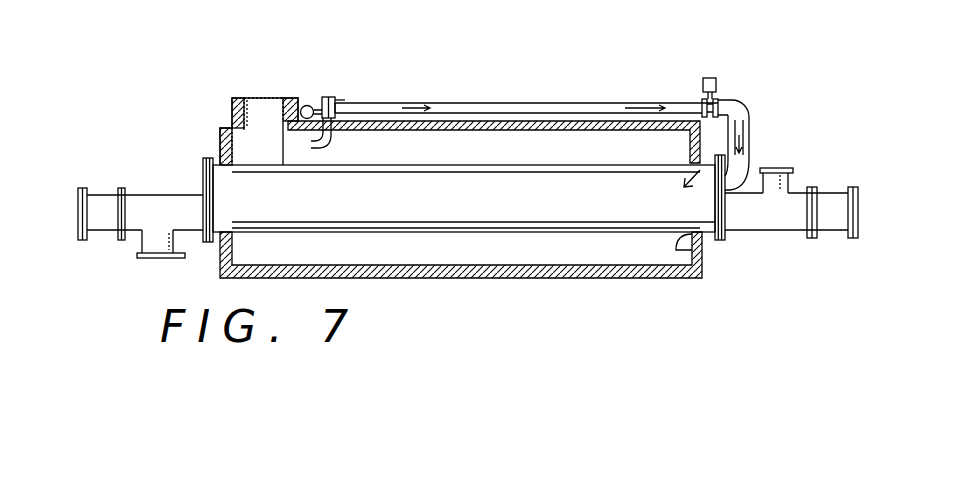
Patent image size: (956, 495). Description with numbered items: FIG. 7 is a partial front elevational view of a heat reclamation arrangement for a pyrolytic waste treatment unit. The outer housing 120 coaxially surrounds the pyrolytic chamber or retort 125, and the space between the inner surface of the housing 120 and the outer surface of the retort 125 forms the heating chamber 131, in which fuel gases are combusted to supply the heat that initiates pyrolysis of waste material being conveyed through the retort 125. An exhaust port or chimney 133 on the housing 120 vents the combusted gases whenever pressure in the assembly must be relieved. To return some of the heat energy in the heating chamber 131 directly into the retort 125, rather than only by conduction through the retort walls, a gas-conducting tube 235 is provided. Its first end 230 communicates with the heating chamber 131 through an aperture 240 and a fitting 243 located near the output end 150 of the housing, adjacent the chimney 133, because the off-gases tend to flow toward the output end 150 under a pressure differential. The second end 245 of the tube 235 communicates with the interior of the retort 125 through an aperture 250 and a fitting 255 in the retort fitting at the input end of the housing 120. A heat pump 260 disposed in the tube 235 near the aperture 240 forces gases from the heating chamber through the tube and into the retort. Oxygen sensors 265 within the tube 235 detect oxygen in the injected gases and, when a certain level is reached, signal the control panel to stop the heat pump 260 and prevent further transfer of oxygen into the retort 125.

The outer housing 120 is at (437, 280).
The retort 125 is at (702, 250).
The heating chamber 131 is at (457, 160).
The exhaust port or chimney 133 is at (268, 104).
The output end 150 is at (203, 160).
The first end 230 is at (318, 97).
The gas-conducting tube 235 is at (530, 113).
The aperture 240 is at (311, 148).
The fitting 243 is at (305, 105).
The second end 245 is at (755, 165).
The aperture 250 is at (773, 168).
The fitting 255 is at (738, 106).
The heat pump 260 is at (332, 97).
The oxygen sensors 265 is at (345, 103).